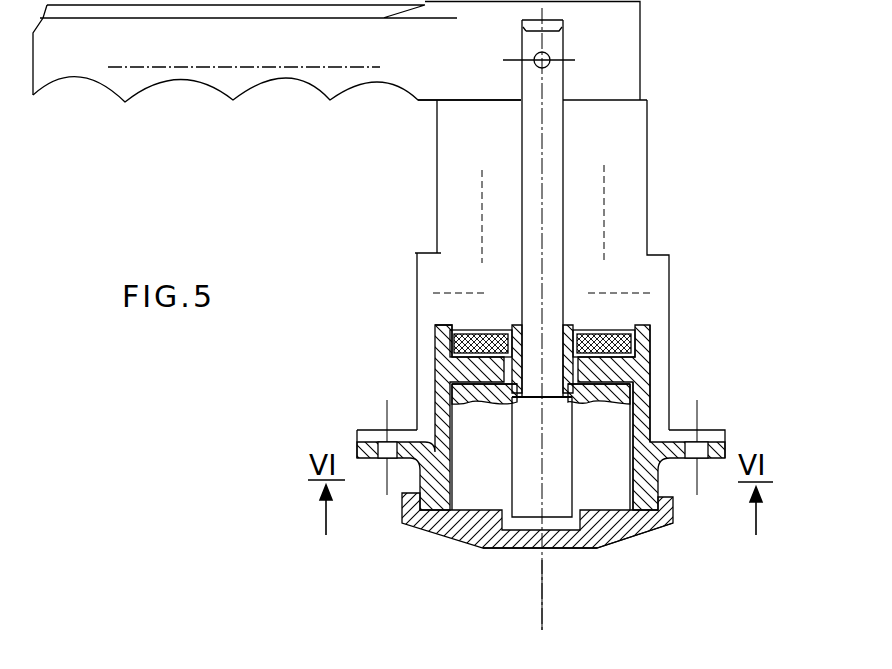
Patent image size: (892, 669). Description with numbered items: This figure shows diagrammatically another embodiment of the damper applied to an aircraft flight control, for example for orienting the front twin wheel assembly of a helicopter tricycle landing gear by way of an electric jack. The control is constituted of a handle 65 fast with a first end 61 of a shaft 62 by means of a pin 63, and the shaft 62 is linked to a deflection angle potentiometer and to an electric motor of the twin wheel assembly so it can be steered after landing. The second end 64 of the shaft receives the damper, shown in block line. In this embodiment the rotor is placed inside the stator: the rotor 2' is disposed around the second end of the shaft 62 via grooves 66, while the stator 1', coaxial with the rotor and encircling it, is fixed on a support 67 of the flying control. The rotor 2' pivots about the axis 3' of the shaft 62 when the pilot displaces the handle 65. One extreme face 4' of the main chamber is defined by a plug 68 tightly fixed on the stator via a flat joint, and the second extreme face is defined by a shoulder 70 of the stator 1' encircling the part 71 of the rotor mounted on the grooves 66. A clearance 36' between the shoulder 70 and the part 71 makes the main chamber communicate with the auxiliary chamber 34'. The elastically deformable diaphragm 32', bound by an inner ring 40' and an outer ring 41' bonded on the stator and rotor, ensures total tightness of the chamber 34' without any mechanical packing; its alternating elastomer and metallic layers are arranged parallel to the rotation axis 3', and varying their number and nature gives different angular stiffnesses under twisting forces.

The first end 61 is at (563, 43).
The pin 63 is at (548, 66).
The handle 65 is at (305, 78).
The shaft 62 is at (553, 195).
The elastically deformable diaphragm 32' is at (445, 298).
The inner ring 40' is at (507, 328).
The outer ring 41' is at (416, 321).
The shoulder 70 is at (463, 365).
The support 67 is at (413, 408).
The second end 64 is at (562, 327).
The auxiliary chamber 34' is at (669, 327).
The part of the rotor 71 is at (622, 377).
The grooves 66 is at (632, 428).
The clearance 36' is at (542, 457).
The stator 1' is at (541, 446).
The rotor 2' is at (537, 544).
The extreme face 4' is at (540, 582).
The plug 68 is at (612, 545).
The axis 3' is at (570, 610).